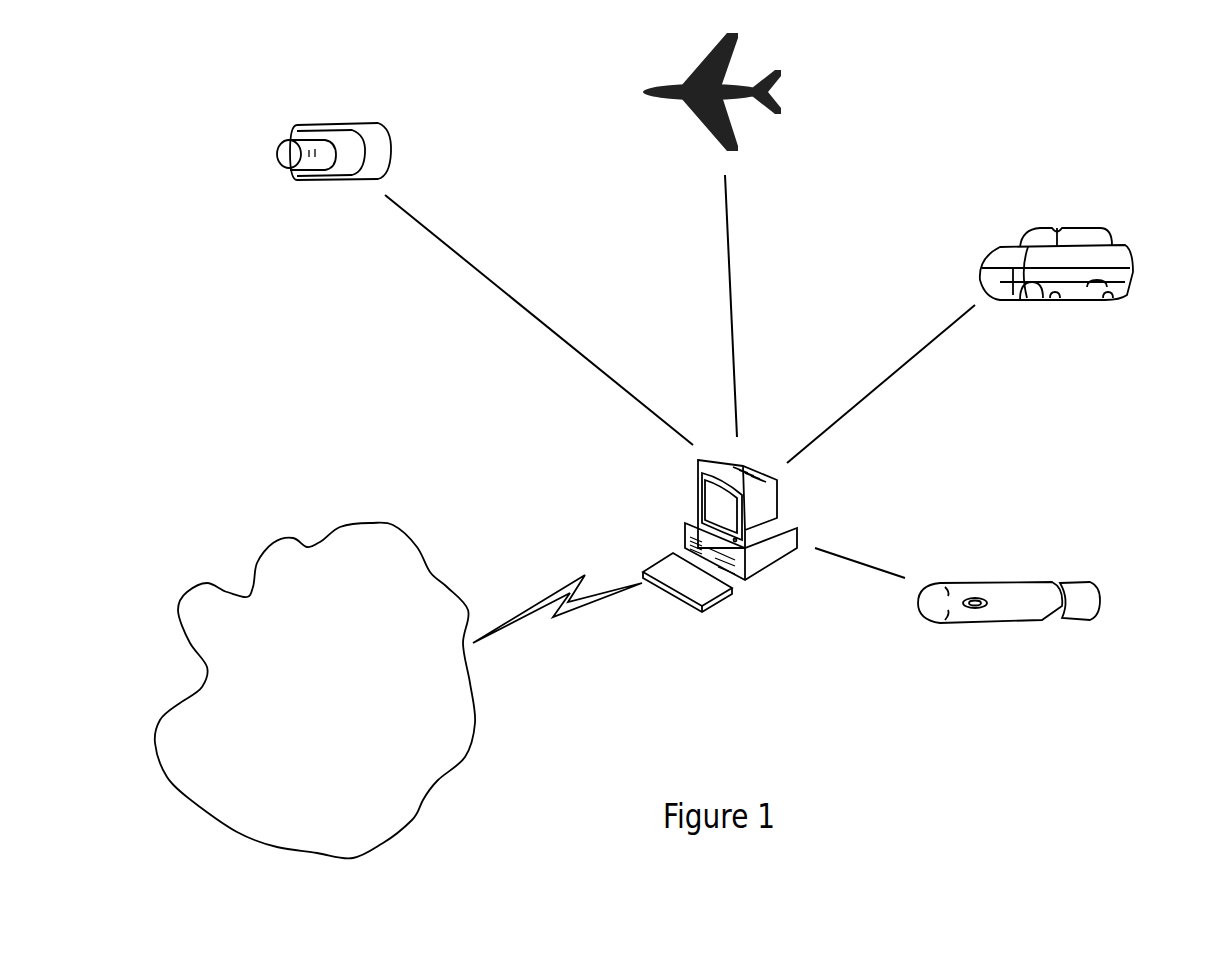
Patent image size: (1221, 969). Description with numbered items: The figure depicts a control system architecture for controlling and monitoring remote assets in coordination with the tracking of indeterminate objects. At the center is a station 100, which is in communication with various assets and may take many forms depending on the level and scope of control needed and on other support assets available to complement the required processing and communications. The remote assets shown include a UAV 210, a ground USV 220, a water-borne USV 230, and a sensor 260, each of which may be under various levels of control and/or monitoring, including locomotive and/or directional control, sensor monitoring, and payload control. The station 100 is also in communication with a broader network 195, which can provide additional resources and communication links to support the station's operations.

The station 100 is at (720, 567).
The network 195 is at (315, 691).
The UAV 210 is at (749, 92).
The USV (ground) 220 is at (1084, 264).
The USV (water-borne) 230 is at (1015, 628).
The sensor 260 is at (310, 146).